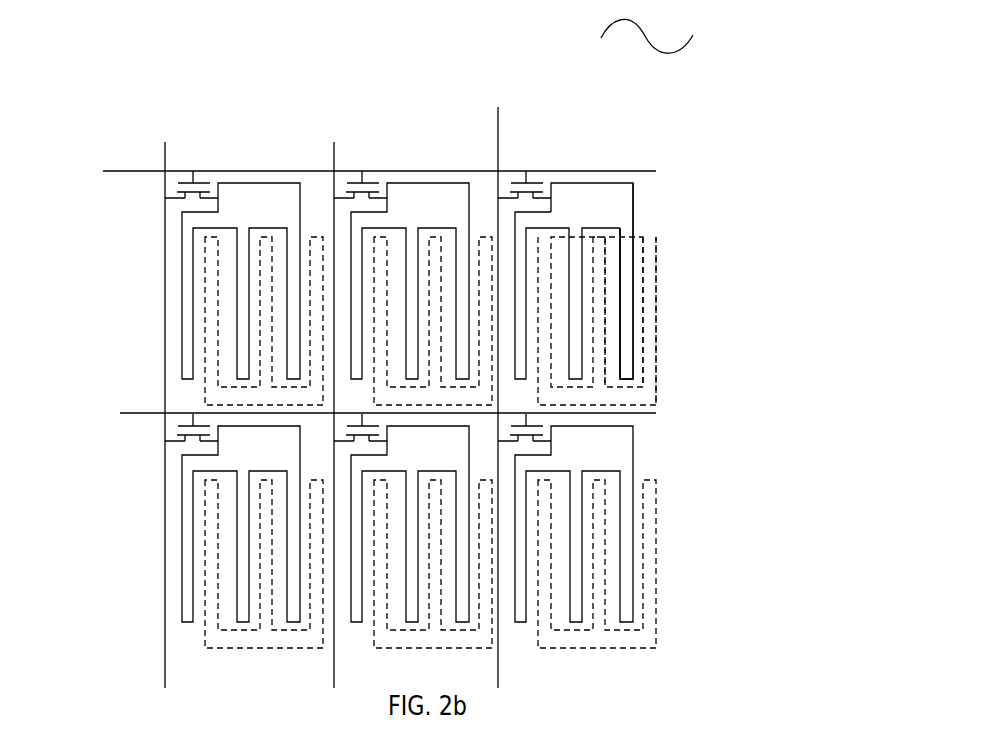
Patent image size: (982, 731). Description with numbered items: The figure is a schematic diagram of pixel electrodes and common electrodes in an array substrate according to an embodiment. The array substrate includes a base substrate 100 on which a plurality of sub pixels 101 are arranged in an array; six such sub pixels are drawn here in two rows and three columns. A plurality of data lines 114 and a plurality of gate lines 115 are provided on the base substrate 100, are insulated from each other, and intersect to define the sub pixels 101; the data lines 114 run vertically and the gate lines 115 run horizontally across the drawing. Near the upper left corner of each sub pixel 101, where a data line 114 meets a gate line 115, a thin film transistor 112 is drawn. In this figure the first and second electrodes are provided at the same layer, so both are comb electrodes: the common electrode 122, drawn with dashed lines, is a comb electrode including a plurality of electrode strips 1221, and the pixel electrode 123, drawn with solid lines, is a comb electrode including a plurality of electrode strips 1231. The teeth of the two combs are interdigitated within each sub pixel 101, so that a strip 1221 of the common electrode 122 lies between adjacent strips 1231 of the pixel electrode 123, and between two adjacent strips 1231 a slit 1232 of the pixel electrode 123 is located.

The base substrate 100 is at (692, 37).
The sub pixel 101 is at (328, 177).
The thin film transistor 112 is at (223, 165).
The data line 114 is at (501, 157).
The gate line 115 is at (127, 411).
The common electrode 122 is at (650, 397).
The electrode strip 1221 is at (650, 347).
The pixel electrode 123 is at (608, 212).
The electrode strip 1231 is at (625, 300).
The slit 1232 is at (612, 263).